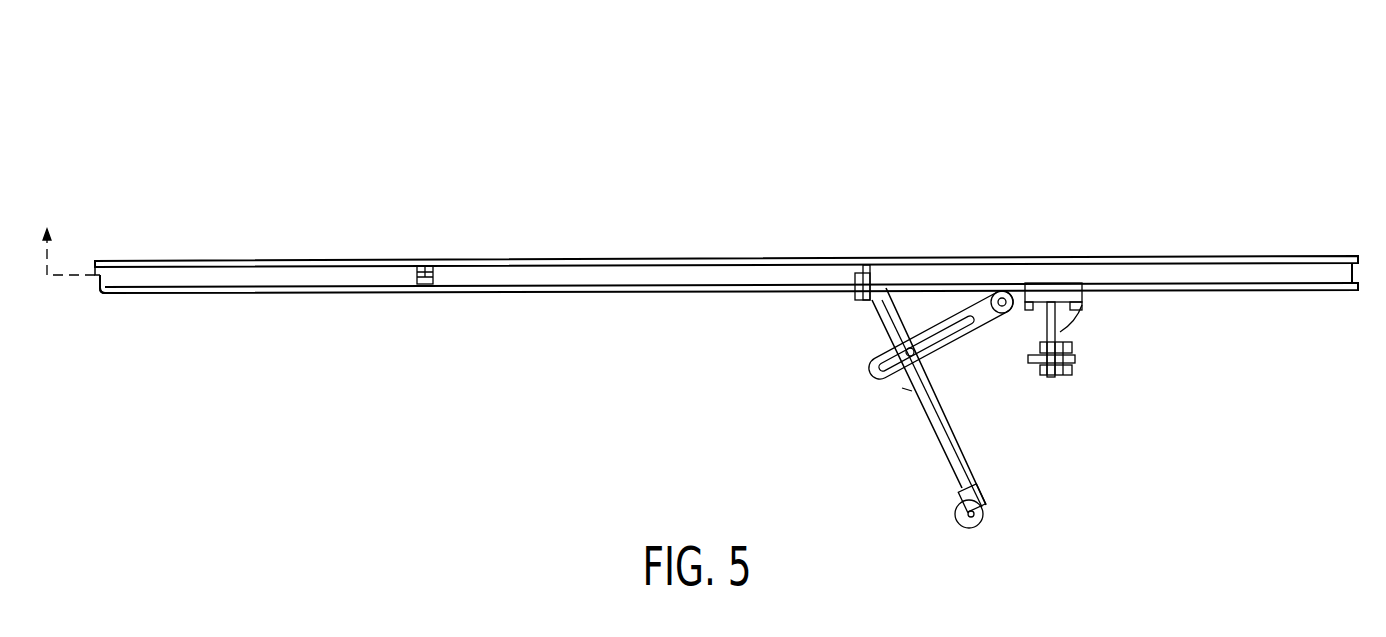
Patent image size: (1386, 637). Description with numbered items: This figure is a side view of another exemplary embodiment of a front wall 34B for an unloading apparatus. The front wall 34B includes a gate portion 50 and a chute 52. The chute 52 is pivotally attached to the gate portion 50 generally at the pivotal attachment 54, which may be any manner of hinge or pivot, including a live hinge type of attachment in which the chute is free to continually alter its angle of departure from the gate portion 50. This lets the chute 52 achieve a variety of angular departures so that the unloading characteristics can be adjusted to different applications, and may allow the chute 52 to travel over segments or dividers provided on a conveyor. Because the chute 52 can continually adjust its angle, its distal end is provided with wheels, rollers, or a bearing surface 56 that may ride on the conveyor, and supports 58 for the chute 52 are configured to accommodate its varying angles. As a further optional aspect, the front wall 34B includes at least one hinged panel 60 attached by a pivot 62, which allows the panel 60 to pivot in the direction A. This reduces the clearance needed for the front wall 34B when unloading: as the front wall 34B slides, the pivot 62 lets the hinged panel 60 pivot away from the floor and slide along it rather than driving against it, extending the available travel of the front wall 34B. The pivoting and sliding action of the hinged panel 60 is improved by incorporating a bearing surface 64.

The front wall 34B is at (799, 98).
The gate portion 50 is at (648, 258).
The chute 52 is at (960, 432).
The pivotal attachment 54 is at (953, 258).
The bearing surface 56 is at (980, 525).
The supports 58 is at (872, 374).
The hinged panel 60 is at (265, 276).
The pivot 62 is at (421, 268).
The bearing surface 64 is at (100, 296).